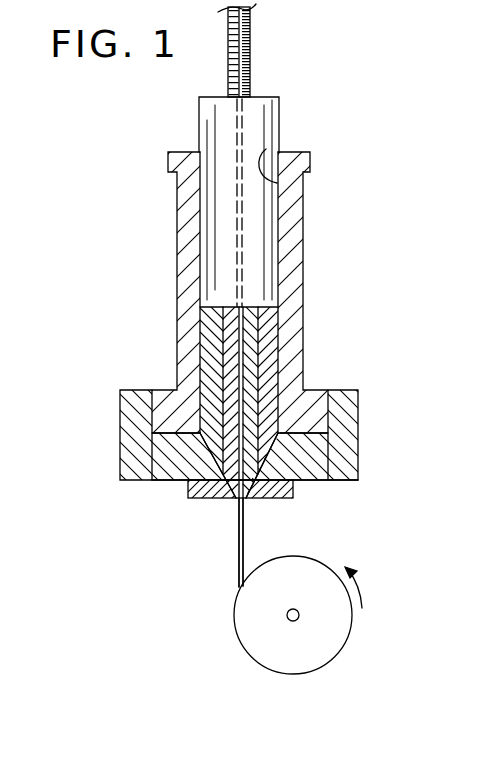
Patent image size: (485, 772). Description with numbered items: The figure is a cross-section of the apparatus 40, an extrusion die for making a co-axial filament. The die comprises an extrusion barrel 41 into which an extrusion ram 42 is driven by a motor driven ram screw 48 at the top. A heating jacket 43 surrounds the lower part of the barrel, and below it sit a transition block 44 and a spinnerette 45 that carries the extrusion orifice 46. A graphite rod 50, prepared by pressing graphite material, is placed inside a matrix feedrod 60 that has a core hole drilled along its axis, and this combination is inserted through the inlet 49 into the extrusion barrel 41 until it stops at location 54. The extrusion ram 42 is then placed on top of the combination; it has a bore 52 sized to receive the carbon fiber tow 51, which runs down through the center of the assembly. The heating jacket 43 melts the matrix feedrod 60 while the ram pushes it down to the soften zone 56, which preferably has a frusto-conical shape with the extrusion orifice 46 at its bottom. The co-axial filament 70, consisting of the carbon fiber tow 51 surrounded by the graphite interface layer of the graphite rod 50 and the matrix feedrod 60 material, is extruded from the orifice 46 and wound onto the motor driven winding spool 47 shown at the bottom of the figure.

The apparatus 40 is at (121, 208).
The extrusion barrel 41 is at (290, 380).
The extrusion ram 42 is at (263, 243).
The heating jacket 43 is at (350, 422).
The transition block 44 is at (297, 467).
The spinnerette 45 is at (190, 500).
The extrusion orifice 46 is at (247, 500).
The motor driven winding spool 47 is at (330, 643).
The motor driven ram screw 48 is at (250, 55).
The inlet 49 is at (266, 149).
The graphite rod 50 is at (230, 332).
The carbon fiber tow 51 is at (240, 293).
The bore 52 is at (240, 272).
The location 54 is at (182, 468).
The soften zone 56 is at (218, 463).
The matrix feedrod 60 is at (208, 361).
The co-axial filament 70 is at (238, 565).